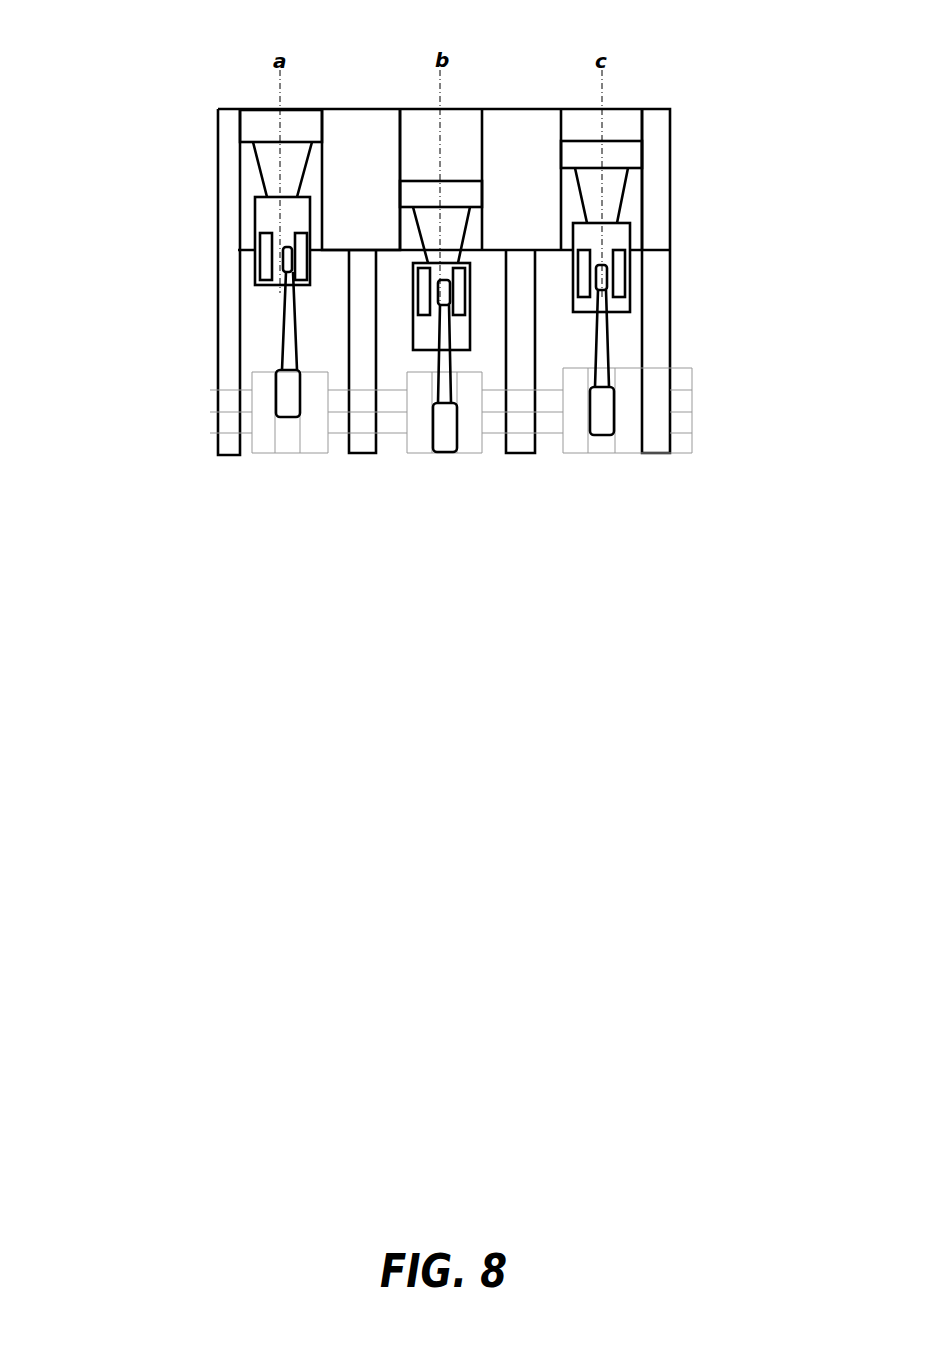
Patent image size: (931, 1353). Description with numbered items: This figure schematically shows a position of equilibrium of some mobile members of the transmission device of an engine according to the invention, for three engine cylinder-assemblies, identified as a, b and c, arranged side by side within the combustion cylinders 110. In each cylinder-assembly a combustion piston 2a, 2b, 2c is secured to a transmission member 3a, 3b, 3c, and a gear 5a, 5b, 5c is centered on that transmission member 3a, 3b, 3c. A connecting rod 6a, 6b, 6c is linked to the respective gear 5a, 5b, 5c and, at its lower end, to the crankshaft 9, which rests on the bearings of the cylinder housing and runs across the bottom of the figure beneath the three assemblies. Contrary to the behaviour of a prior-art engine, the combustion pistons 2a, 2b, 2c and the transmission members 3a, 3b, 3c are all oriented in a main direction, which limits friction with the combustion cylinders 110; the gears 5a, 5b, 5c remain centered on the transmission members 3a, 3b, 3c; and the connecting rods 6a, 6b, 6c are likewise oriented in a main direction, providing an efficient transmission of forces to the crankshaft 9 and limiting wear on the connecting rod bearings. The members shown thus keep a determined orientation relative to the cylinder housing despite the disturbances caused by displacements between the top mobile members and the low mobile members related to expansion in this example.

The combustion cylinders 110 is at (240, 108).
The combustion piston 2a is at (257, 133).
The transmission member 3a is at (273, 173).
The gear 5a is at (263, 265).
The connecting rod 6a is at (287, 370).
The combustion piston 2b is at (455, 193).
The transmission member 3b is at (450, 230).
The gear 5b is at (427, 308).
The connecting rod 6b is at (445, 402).
The combustion piston 2c is at (623, 153).
The transmission member 3c is at (608, 198).
The gear 5c is at (617, 277).
The connecting rod 6c is at (602, 353).
The crankshaft 9 is at (682, 422).